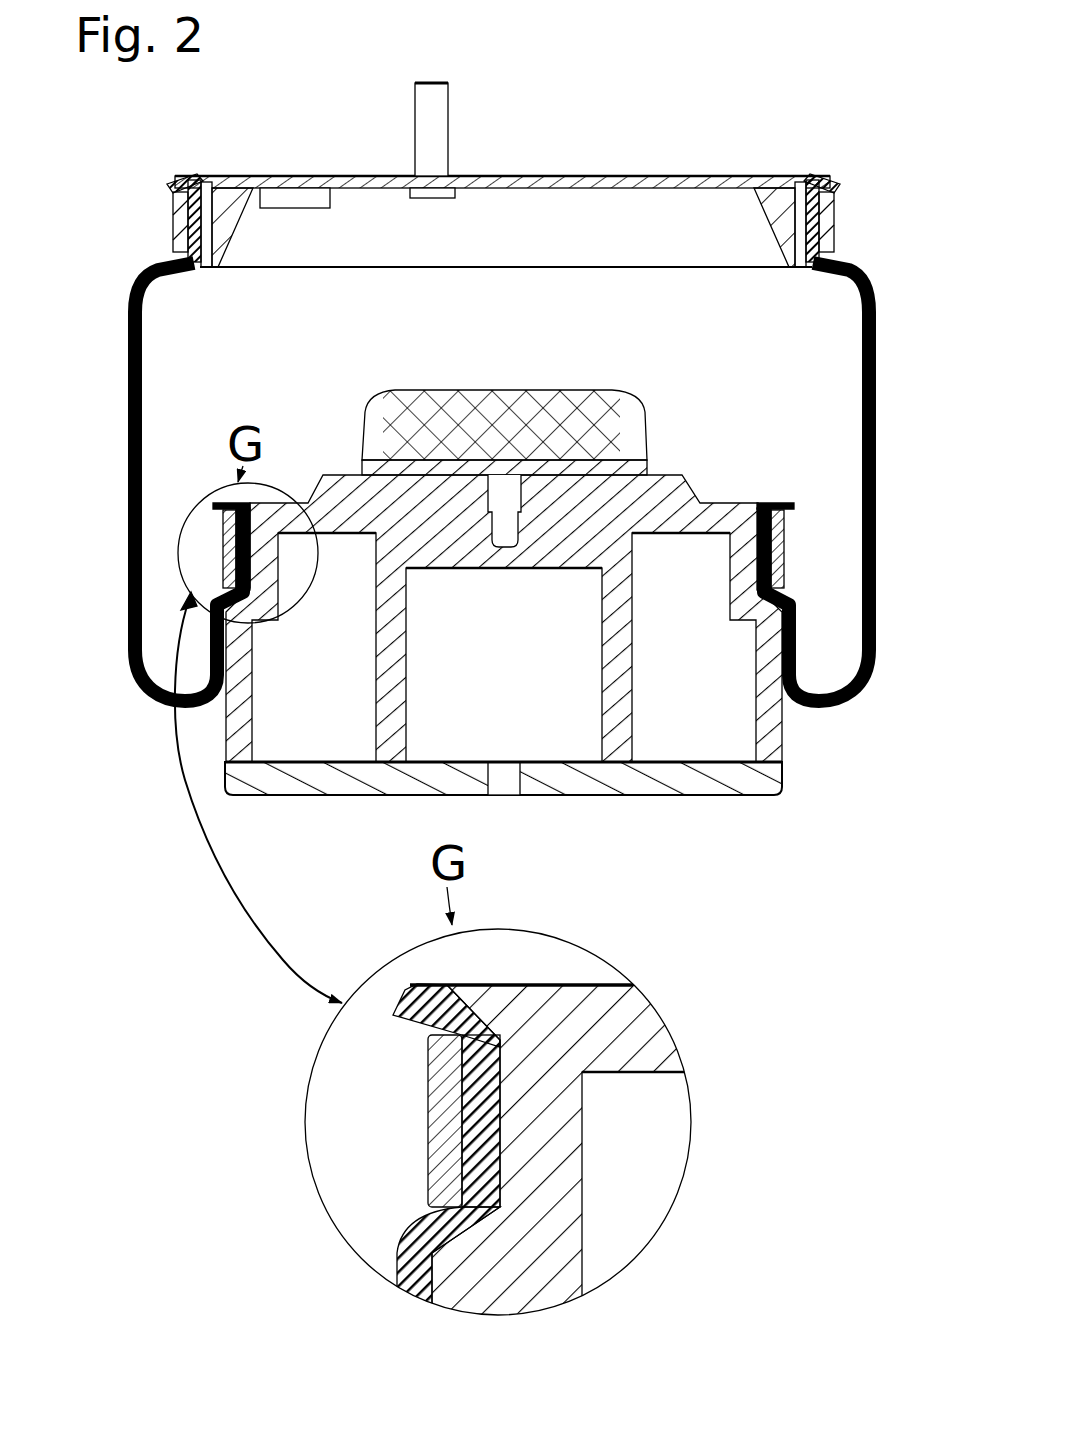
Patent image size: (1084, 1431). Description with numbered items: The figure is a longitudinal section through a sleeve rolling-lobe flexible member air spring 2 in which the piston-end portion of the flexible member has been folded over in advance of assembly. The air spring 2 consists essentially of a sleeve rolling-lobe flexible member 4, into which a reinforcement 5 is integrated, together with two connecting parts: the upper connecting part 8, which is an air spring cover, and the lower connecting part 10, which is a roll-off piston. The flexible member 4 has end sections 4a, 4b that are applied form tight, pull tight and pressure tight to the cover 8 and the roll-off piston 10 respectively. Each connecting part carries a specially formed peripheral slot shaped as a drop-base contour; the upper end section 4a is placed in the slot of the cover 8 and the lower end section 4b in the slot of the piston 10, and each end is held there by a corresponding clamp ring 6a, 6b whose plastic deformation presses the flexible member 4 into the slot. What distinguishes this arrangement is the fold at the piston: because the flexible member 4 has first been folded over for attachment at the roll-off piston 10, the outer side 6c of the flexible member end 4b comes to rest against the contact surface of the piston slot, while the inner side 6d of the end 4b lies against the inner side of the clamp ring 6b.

The air spring 2 is at (456, 695).
The sleeve rolling-lobe flexible member 4 is at (128, 305).
The end section of the sleeve rolling-lobe flexible member 4a is at (206, 180).
The end section of the sleeve rolling-lobe flexible member 4b is at (226, 499).
The reinforcement 5 is at (393, 1014).
The clamp ring 6a is at (180, 232).
The clamp ring 6b is at (220, 553).
The outer side of the flexible member end 6c is at (126, 450).
The inner side of the flexible member end 6d is at (150, 440).
The upper connecting part 8 is at (592, 186).
The lower connecting part 10 is at (234, 699).